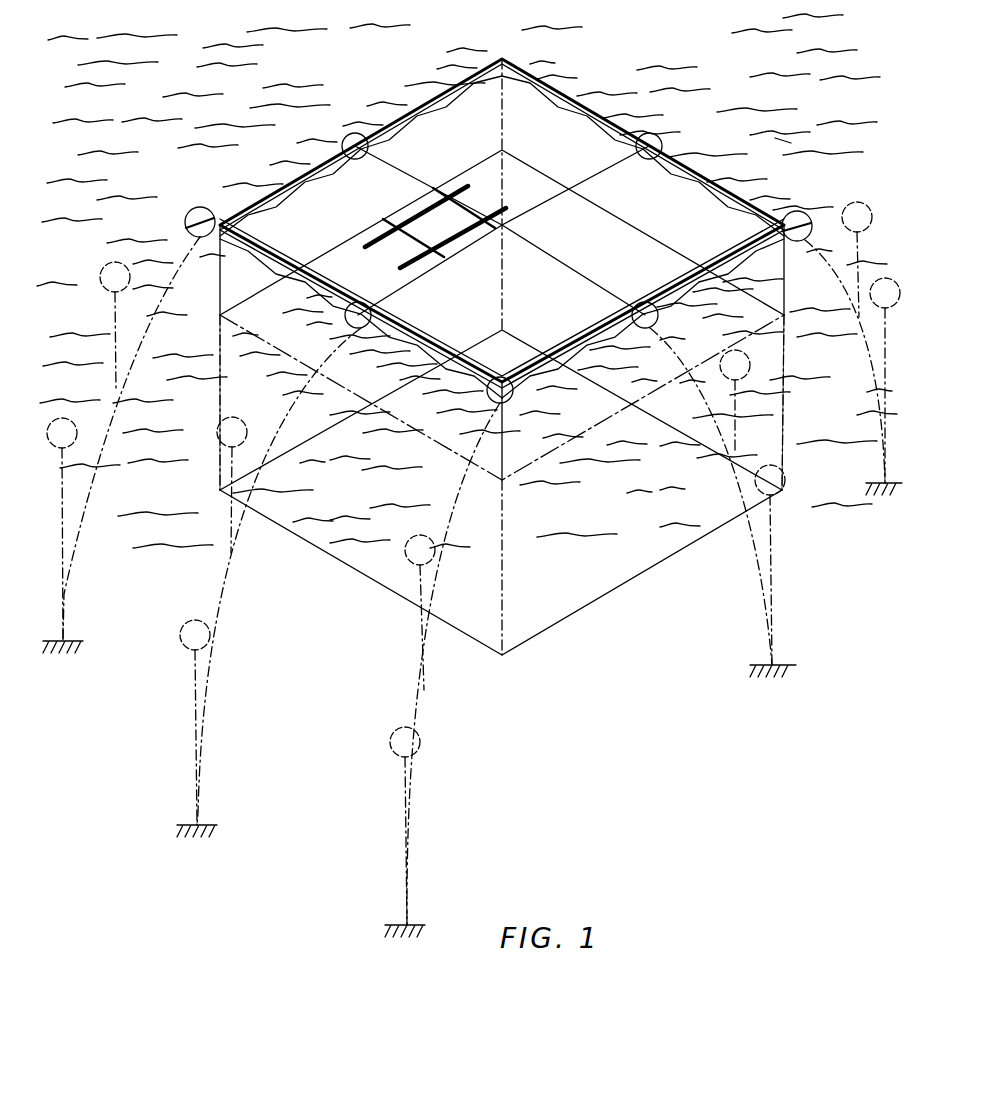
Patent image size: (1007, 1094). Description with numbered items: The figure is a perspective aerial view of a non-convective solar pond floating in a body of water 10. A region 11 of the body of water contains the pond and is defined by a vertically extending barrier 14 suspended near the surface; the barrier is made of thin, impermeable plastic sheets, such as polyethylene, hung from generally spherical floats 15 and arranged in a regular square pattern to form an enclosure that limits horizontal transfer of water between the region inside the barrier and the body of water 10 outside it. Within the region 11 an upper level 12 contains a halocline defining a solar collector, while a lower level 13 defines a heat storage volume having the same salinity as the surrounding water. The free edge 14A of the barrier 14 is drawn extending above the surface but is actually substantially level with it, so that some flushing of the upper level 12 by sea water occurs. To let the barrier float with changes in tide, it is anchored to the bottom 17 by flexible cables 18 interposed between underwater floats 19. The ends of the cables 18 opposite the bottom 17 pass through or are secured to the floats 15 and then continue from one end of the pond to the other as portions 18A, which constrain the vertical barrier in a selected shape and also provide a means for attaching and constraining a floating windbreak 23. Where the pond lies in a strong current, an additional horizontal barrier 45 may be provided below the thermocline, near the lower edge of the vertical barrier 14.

The body of water 10 is at (775, 140).
The region 11 is at (600, 161).
The upper level 12 is at (283, 312).
The lower level 13 is at (360, 498).
The vertically extending barrier 14 is at (563, 110).
The free edge 14A is at (407, 165).
The floats 15 is at (202, 207).
The bottom 17 is at (193, 818).
The flexible cable 18 is at (420, 680).
The portions 18A is at (407, 114).
The underwater floats 19 is at (859, 202).
The floating windbreak 23 is at (427, 227).
The additional horizontal barrier 45 is at (670, 534).